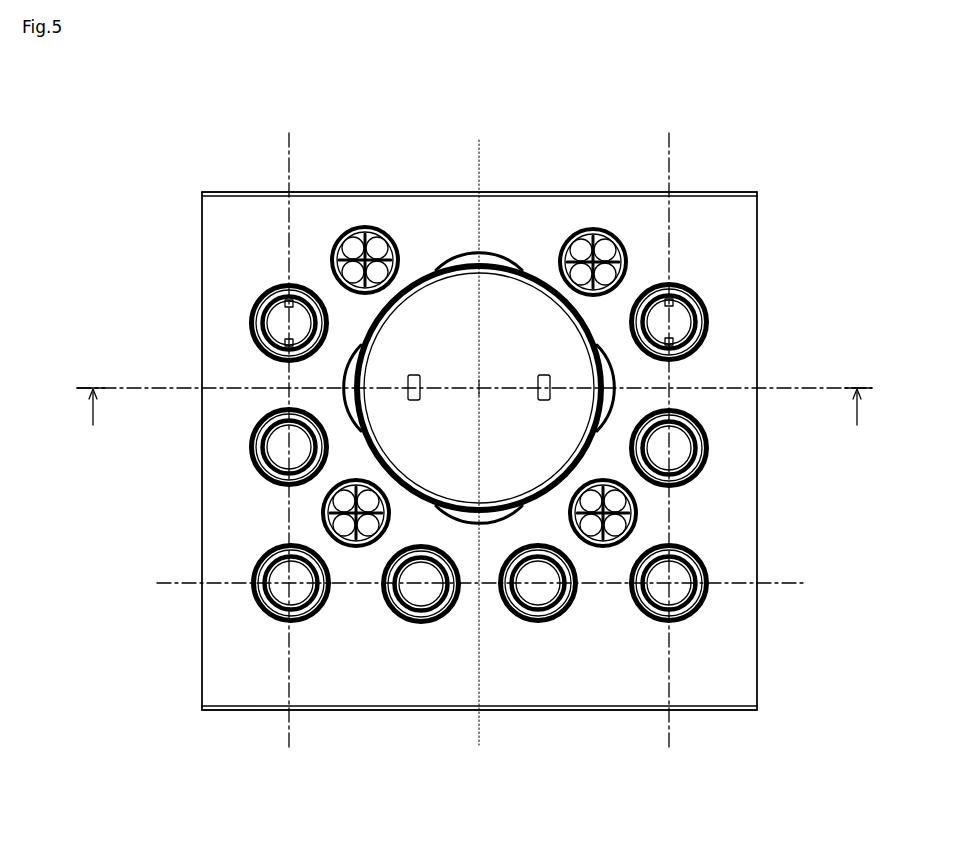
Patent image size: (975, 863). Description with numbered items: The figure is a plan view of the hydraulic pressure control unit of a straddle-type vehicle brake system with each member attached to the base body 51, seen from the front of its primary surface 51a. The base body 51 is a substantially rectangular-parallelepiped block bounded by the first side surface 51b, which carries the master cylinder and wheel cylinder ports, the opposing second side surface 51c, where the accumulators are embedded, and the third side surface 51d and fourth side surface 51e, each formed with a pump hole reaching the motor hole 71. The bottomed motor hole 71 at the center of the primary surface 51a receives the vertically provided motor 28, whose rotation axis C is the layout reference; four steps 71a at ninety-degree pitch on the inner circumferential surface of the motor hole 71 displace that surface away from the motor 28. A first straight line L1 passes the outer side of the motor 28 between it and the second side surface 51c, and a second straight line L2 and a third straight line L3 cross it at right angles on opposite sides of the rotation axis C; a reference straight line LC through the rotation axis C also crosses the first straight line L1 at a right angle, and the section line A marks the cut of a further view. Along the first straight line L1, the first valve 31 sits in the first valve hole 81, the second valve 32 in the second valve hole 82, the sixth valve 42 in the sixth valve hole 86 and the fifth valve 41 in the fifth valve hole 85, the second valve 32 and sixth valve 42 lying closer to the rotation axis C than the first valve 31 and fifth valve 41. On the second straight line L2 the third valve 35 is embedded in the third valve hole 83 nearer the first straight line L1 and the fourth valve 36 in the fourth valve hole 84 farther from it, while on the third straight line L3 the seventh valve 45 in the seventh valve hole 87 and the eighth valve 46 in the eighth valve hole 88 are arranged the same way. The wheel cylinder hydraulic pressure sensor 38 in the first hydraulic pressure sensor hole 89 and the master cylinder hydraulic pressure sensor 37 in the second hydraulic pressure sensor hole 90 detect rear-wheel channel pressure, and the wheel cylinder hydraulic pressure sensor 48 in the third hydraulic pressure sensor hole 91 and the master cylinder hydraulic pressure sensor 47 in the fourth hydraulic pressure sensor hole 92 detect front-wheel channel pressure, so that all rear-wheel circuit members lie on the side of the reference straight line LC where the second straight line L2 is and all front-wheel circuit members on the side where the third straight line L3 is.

The base body 51 is at (720, 212).
The primary surface 51a is at (233, 212).
The first side surface 51b is at (250, 212).
The second side surface 51c is at (250, 712).
The third side surface 51d is at (757, 228).
The fourth side surface 51e is at (202, 227).
The motor hole 71 is at (427, 262).
The steps 71a is at (483, 253).
The motor 28 is at (507, 307).
The rotation axis of the motor C is at (479, 387).
The reference straight line LC is at (479, 158).
The first straight line L1 is at (180, 583).
The second straight line L2 is at (669, 735).
The third straight line L3 is at (290, 735).
The section line A- A is at (476, 406).
The eighth valve 46 is at (250, 308).
The eighth valve hole 88 is at (252, 331).
The fourth valve 36 is at (707, 307).
The fourth valve hole 84 is at (700, 342).
The seventh valve 45 is at (280, 451).
The seventh valve hole 87 is at (250, 441).
The third valve 35 is at (677, 453).
The third valve hole 83 is at (710, 439).
The fifth valve 41 is at (254, 603).
The fifth valve hole 85 is at (272, 594).
The sixth valve 42 is at (409, 623).
The sixth valve hole 86 is at (423, 600).
The second valve 32 is at (546, 623).
The second valve hole 82 is at (537, 598).
The first valve 31 is at (705, 603).
The first valve hole 81 is at (677, 592).
The master cylinder hydraulic pressure sensor 47 is at (353, 227).
The fourth hydraulic pressure sensor hole 92 is at (370, 248).
The master cylinder hydraulic pressure sensor 37 is at (607, 230).
The second hydraulic pressure sensor hole 90 is at (590, 250).
The wheel cylinder hydraulic pressure sensor 48 is at (323, 531).
The third hydraulic pressure sensor hole 91 is at (342, 525).
The wheel cylinder hydraulic pressure sensor 38 is at (636, 530).
The first hydraulic pressure sensor hole 89 is at (620, 520).